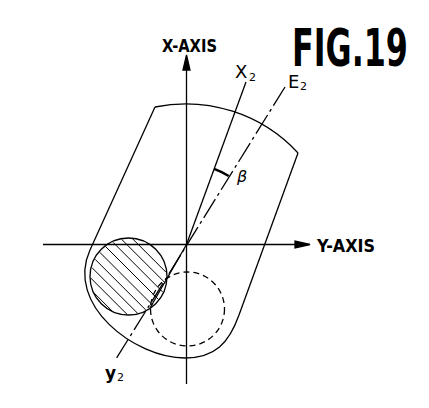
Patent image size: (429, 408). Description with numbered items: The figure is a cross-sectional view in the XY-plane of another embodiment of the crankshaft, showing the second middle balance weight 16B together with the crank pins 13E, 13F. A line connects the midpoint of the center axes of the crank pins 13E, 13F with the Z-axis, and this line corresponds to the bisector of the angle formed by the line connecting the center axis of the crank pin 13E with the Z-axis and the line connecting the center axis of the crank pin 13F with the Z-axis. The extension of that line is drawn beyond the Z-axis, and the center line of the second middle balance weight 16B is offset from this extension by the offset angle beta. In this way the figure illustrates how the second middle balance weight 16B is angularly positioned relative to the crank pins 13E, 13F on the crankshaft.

The second middle balance weight 16B is at (294, 149).
The crank pin 13E is at (94, 297).
The crank pin 13F is at (226, 312).